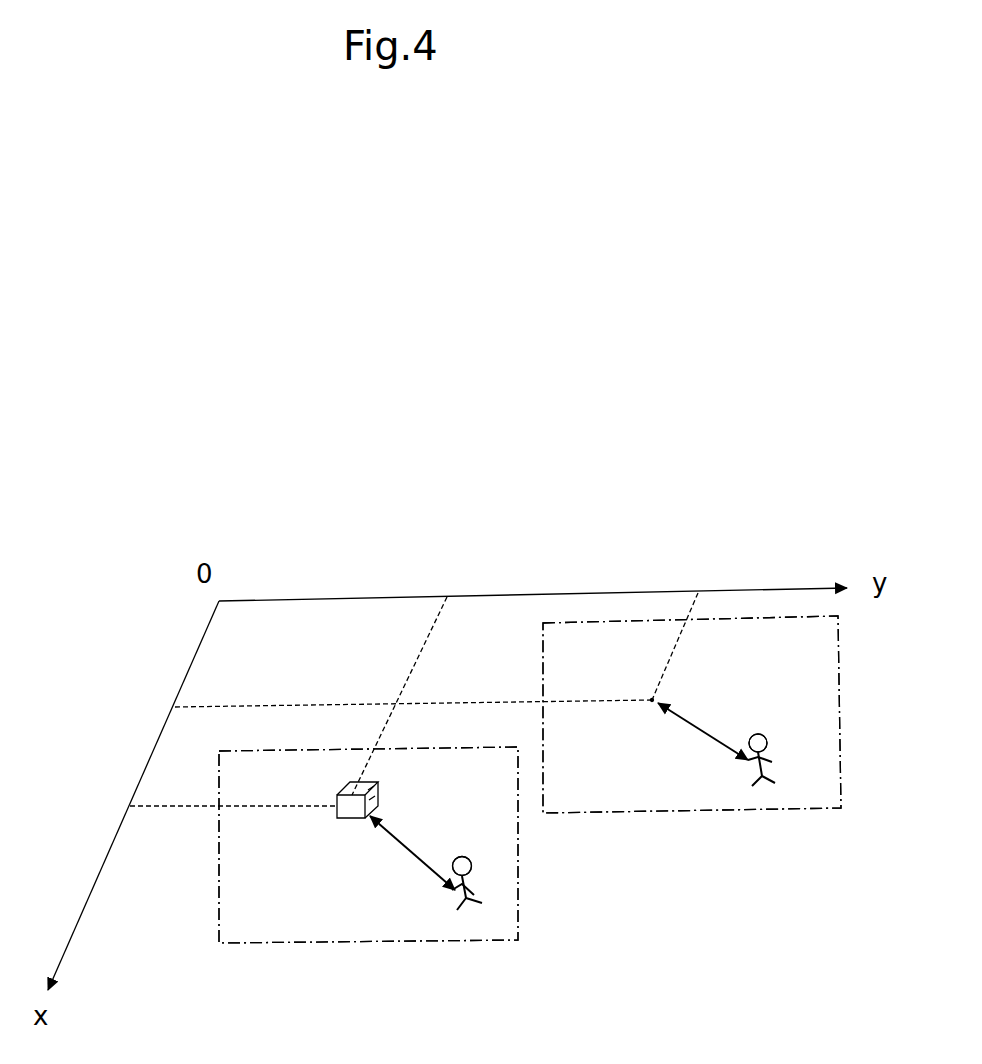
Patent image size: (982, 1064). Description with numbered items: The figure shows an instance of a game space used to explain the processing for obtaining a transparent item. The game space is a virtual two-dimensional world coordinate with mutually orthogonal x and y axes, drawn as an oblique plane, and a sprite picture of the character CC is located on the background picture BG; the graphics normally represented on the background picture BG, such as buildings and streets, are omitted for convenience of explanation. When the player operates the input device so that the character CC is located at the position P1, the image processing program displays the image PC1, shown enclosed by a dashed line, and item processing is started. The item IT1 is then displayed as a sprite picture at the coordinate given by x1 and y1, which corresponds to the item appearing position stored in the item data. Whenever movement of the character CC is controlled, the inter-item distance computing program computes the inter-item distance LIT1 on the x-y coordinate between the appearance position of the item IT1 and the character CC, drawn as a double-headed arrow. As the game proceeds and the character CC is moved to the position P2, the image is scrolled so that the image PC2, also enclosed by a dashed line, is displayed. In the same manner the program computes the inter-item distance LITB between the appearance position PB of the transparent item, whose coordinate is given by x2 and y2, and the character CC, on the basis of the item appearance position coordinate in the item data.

The background picture BG is at (290, 934).
The image PC1 is at (362, 943).
The image PC2 is at (678, 812).
The item IT1 is at (350, 820).
The position P1 is at (472, 903).
The position P2 is at (765, 783).
The character CC is at (486, 886).
The appearance position PB is at (652, 698).
The inter-item distance LIT1 is at (412, 847).
The inter-item distance LITB is at (706, 727).
The x coordinate x1 is at (203, 811).
The x coordinate x2 is at (383, 701).
The y coordinate y1 is at (418, 670).
The y coordinate y2 is at (692, 623).